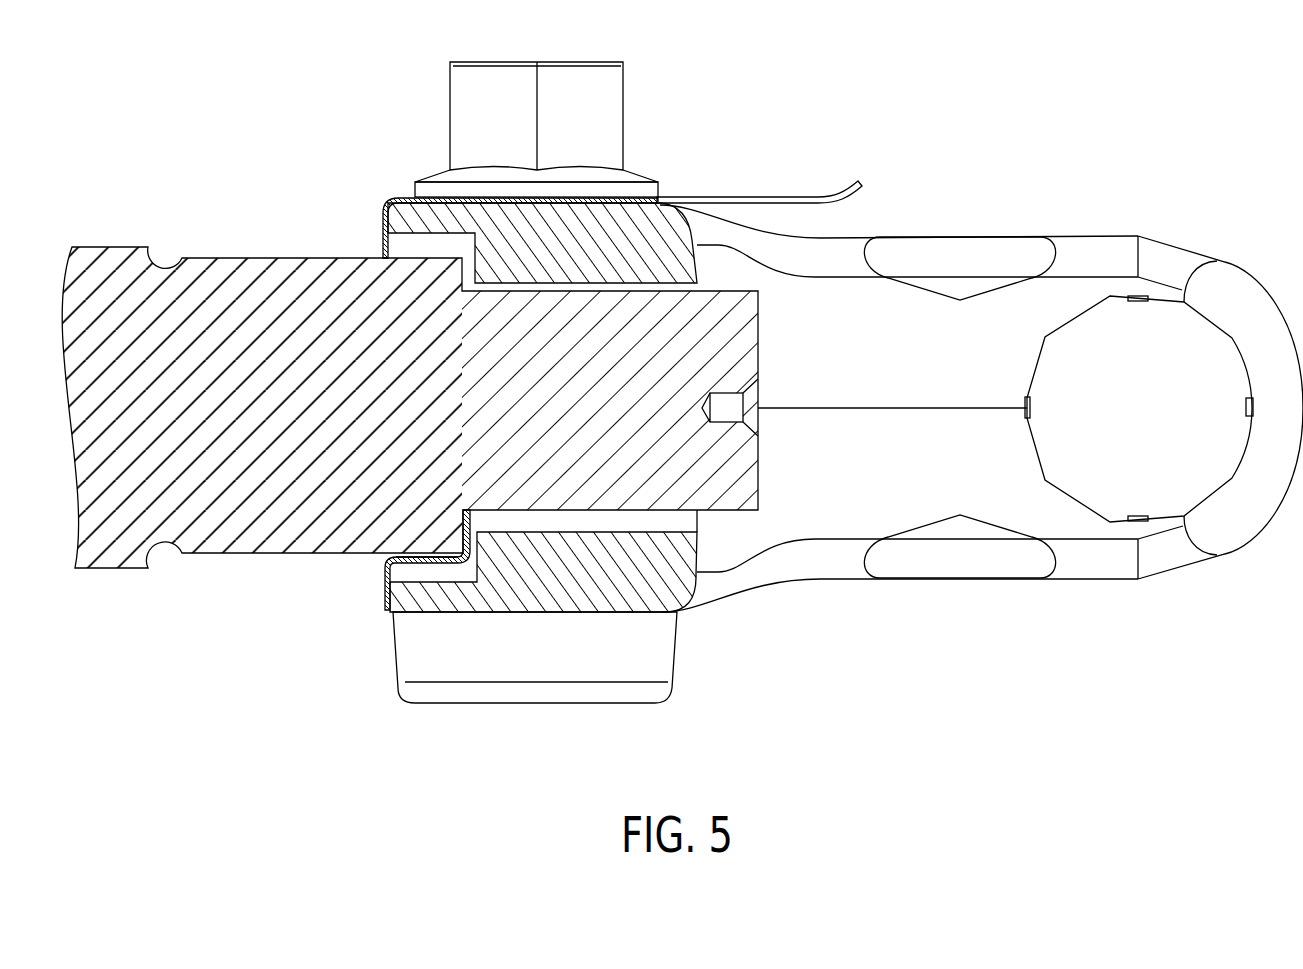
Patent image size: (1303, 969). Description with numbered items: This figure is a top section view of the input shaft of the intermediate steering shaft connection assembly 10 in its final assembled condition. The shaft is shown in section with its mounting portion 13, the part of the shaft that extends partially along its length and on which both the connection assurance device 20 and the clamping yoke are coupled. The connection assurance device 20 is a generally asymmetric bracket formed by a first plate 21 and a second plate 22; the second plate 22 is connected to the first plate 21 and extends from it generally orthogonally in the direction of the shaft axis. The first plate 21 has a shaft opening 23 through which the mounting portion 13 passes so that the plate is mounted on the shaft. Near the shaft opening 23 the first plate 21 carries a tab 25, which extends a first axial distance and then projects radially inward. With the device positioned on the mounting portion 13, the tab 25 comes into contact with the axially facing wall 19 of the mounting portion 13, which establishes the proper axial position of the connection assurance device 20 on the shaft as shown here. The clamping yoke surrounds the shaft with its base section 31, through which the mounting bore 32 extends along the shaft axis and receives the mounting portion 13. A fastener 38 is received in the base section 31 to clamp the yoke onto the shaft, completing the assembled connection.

The intermediate steering shaft connection assembly 10 is at (852, 93).
The mounting portion 13 is at (307, 535).
The axially facing wall 19 is at (385, 578).
The connection assurance device 20 is at (374, 184).
The first plate 21 is at (383, 236).
The second plate 22 is at (758, 197).
The shaft opening 23 is at (385, 263).
The tab 25 is at (456, 566).
The base section 31 is at (606, 595).
The mounting bore 32 is at (648, 527).
The fastener 38 is at (612, 115).